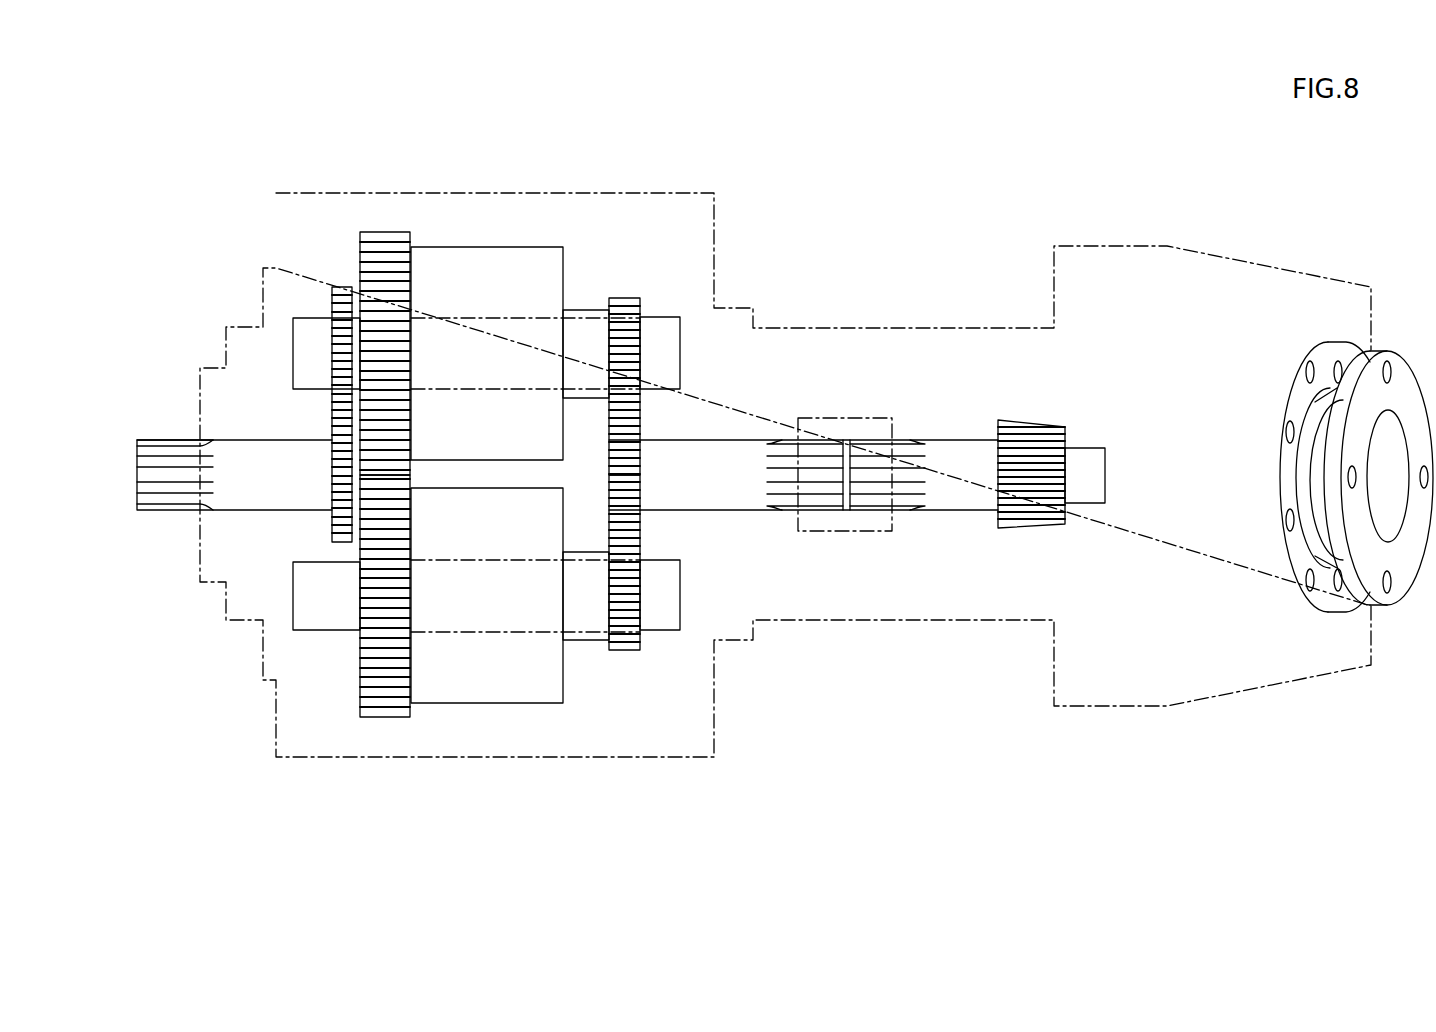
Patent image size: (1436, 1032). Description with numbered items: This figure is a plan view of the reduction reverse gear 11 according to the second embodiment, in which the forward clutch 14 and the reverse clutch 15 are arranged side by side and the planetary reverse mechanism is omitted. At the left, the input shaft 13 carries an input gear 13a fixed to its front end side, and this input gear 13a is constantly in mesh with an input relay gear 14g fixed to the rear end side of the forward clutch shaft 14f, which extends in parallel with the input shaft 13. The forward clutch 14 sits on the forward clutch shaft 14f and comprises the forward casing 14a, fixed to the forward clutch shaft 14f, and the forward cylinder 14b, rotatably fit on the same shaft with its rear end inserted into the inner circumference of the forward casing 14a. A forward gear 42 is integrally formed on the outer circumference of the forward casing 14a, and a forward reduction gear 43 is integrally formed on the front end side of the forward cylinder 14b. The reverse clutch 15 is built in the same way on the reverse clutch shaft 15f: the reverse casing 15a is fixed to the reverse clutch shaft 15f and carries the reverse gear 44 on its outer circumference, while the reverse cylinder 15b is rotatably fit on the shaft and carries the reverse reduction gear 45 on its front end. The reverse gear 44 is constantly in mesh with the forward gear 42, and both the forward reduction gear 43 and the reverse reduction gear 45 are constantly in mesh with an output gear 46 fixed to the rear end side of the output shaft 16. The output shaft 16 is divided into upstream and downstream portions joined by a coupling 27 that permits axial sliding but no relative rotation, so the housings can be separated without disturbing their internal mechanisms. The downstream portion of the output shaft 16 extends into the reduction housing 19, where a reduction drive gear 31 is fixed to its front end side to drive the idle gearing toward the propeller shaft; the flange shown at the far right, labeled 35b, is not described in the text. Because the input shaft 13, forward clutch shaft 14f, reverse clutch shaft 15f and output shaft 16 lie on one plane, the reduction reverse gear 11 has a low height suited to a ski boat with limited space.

The reduction reverse gear 11 is at (853, 200).
The input shaft 13 is at (167, 498).
The input gear 13a is at (333, 528).
The forward clutch 14 is at (447, 290).
The forward casing 14a is at (512, 250).
The forward cylinder 14b is at (585, 310).
The forward clutch shaft 14f is at (305, 360).
The input relay gear 14g is at (341, 290).
The reverse clutch 15 is at (468, 687).
The reverse casing 15a is at (522, 697).
The reverse cylinder 15b is at (585, 636).
The reverse clutch shaft 15f is at (305, 602).
The output shaft 16 is at (724, 457).
The reduction housing 19 is at (1045, 328).
The coupling 27 is at (857, 413).
The reduction drive gear 31 is at (1030, 528).
The flange 35b is at (1413, 562).
The forward gear 42 is at (385, 237).
The forward reduction gear 43 is at (622, 298).
The reverse gear 44 is at (381, 718).
The reverse reduction gear 45 is at (627, 655).
The output gear 46 is at (637, 467).